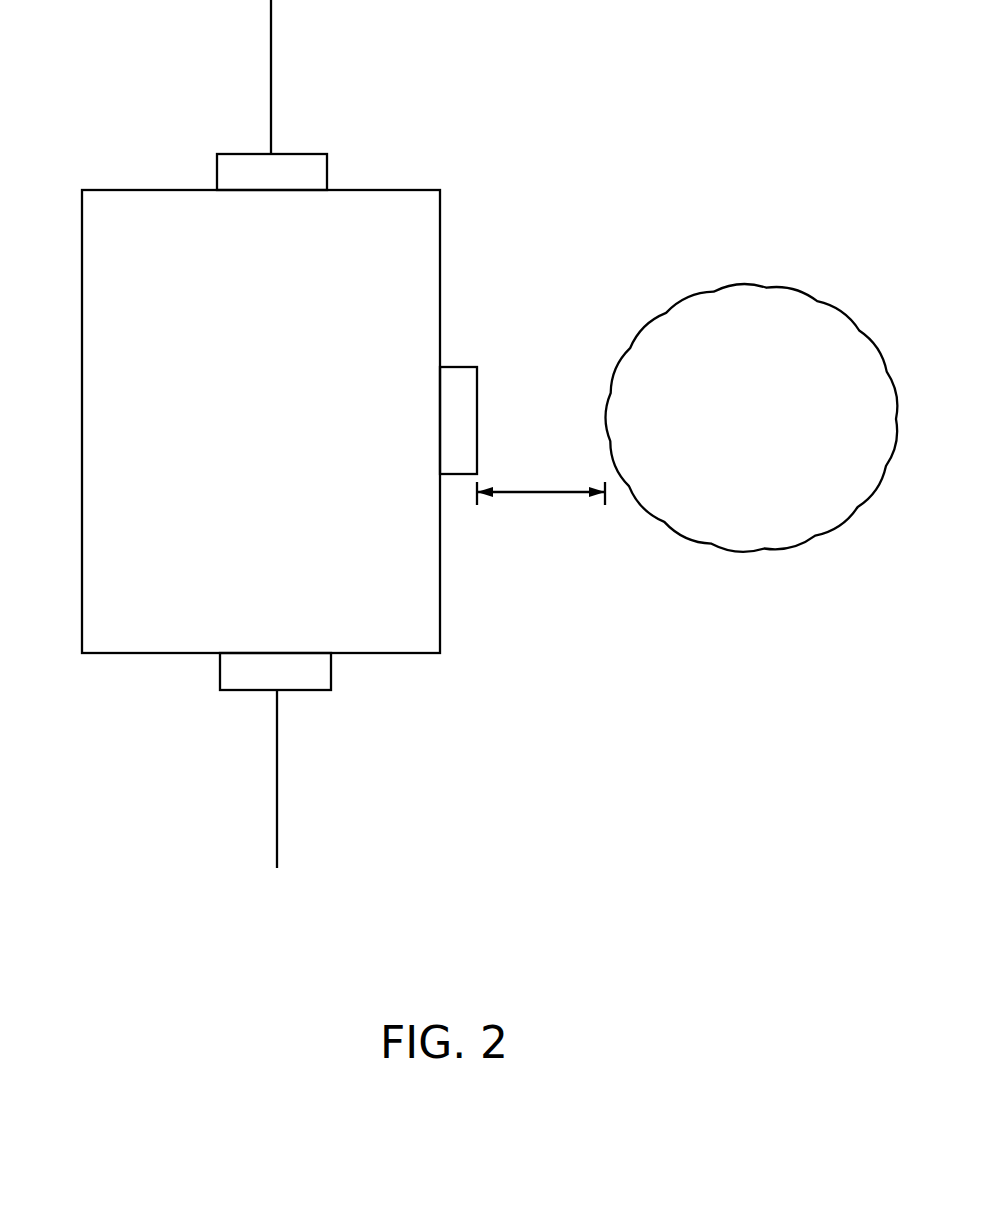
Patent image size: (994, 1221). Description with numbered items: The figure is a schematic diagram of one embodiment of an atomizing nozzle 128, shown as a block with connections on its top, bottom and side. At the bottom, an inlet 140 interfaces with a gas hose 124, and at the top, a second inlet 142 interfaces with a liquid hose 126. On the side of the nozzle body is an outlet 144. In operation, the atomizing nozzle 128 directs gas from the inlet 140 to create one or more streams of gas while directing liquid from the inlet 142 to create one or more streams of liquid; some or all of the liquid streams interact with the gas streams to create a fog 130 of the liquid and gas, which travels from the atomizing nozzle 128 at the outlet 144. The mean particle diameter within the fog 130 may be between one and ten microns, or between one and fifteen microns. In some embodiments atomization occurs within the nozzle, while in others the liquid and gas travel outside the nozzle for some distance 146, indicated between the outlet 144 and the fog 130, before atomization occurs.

The gas hose 124 is at (277, 760).
The liquid hose 126 is at (271, 65).
The atomizing nozzle 128 is at (180, 190).
The fog 130 is at (740, 267).
The inlet 140 is at (220, 680).
The inlet 142 is at (328, 170).
The outlet 144 is at (477, 392).
The distance 146 is at (540, 495).